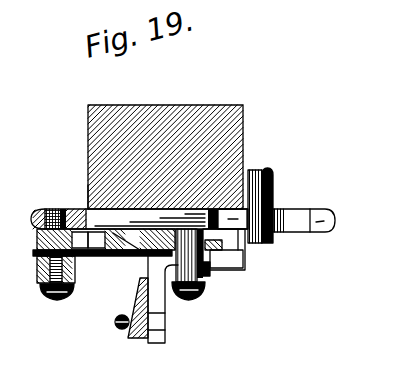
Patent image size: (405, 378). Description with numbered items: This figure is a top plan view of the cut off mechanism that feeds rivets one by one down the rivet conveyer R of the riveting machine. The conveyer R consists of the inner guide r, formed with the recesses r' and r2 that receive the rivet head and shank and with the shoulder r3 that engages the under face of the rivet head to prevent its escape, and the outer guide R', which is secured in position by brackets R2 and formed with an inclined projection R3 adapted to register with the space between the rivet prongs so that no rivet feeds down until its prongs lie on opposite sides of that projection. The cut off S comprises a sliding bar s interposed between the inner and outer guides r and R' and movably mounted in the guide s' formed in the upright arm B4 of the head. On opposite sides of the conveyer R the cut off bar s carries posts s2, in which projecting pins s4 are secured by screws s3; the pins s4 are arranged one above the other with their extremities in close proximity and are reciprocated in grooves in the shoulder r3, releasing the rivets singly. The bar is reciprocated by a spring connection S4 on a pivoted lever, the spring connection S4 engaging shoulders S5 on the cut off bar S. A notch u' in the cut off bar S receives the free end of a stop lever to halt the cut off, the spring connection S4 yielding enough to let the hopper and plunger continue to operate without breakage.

The upright arm B4 is at (219, 107).
The cut off S is at (58, 208).
The spring connection S4 is at (273, 182).
The shoulders S5 is at (312, 212).
The rivet conveyer R is at (106, 213).
The outer guide R' is at (118, 308).
The brackets R2 is at (158, 309).
The inclined projection R3 is at (140, 279).
The sliding bar s is at (104, 243).
The guide s' is at (75, 183).
The posts s2 is at (210, 272).
The screws s3 is at (200, 293).
The projecting pins s4 is at (152, 253).
The inner guide r is at (98, 266).
The recess r' is at (109, 266).
The recess r2 is at (127, 253).
The shoulder r3 is at (184, 225).
The notch u' is at (236, 250).